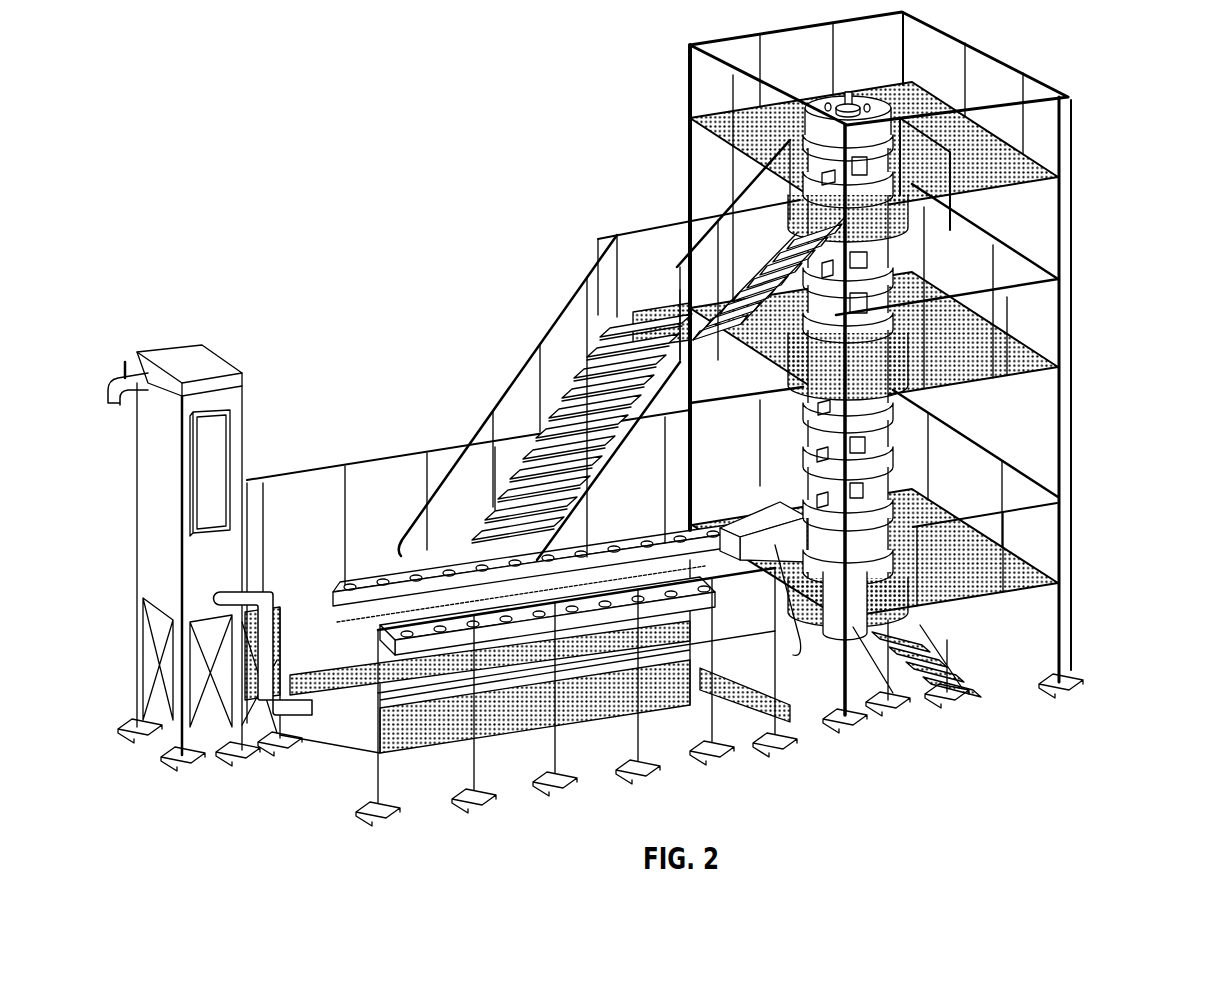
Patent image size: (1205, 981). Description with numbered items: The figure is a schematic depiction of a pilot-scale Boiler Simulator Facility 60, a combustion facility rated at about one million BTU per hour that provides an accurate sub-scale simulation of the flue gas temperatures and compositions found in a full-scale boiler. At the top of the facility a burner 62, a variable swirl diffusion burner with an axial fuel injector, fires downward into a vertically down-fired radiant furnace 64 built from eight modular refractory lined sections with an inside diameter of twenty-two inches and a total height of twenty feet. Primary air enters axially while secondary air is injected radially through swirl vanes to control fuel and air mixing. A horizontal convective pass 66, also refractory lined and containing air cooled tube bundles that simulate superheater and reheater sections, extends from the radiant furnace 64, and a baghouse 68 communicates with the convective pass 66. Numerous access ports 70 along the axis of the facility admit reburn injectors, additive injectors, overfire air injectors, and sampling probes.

The Boiler Simulator Facility 60 is at (654, 419).
The burner 62 is at (830, 98).
The radiant furnace 64 is at (845, 173).
The convective pass 66 is at (527, 562).
The baghouse 68 is at (183, 345).
The access ports 70 is at (617, 232).